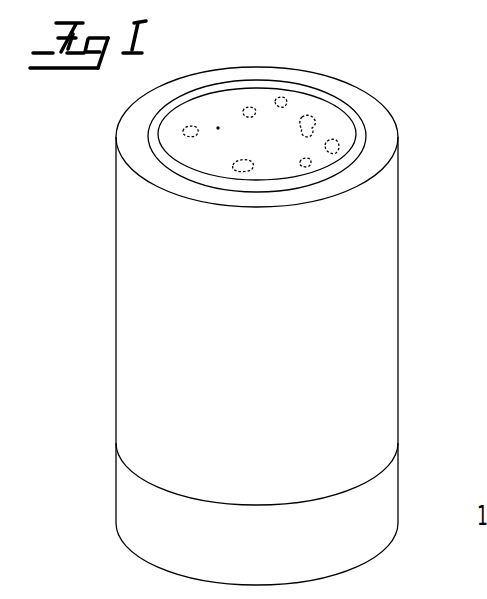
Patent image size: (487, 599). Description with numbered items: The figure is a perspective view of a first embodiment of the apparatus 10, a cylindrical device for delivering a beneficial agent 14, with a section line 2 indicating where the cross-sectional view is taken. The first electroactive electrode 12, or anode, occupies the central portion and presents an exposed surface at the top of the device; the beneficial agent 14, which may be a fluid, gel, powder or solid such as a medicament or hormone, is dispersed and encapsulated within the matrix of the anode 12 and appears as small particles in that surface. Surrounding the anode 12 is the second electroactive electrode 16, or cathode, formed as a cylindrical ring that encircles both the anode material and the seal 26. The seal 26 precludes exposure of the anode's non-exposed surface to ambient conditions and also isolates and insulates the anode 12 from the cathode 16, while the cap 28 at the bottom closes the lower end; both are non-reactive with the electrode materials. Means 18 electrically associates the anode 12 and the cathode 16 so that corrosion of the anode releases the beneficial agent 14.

The apparatus 10 is at (220, 51).
The first electroactive electrode 12 is at (304, 96).
The beneficial agent 14 is at (312, 116).
The second electroactive electrode 16 is at (404, 260).
The means for electrically associating the anode and the cathode 18 is at (95, 509).
The seal 26 is at (160, 118).
The cap 28 is at (377, 550).
The section line 2- 2 is at (84, 197).